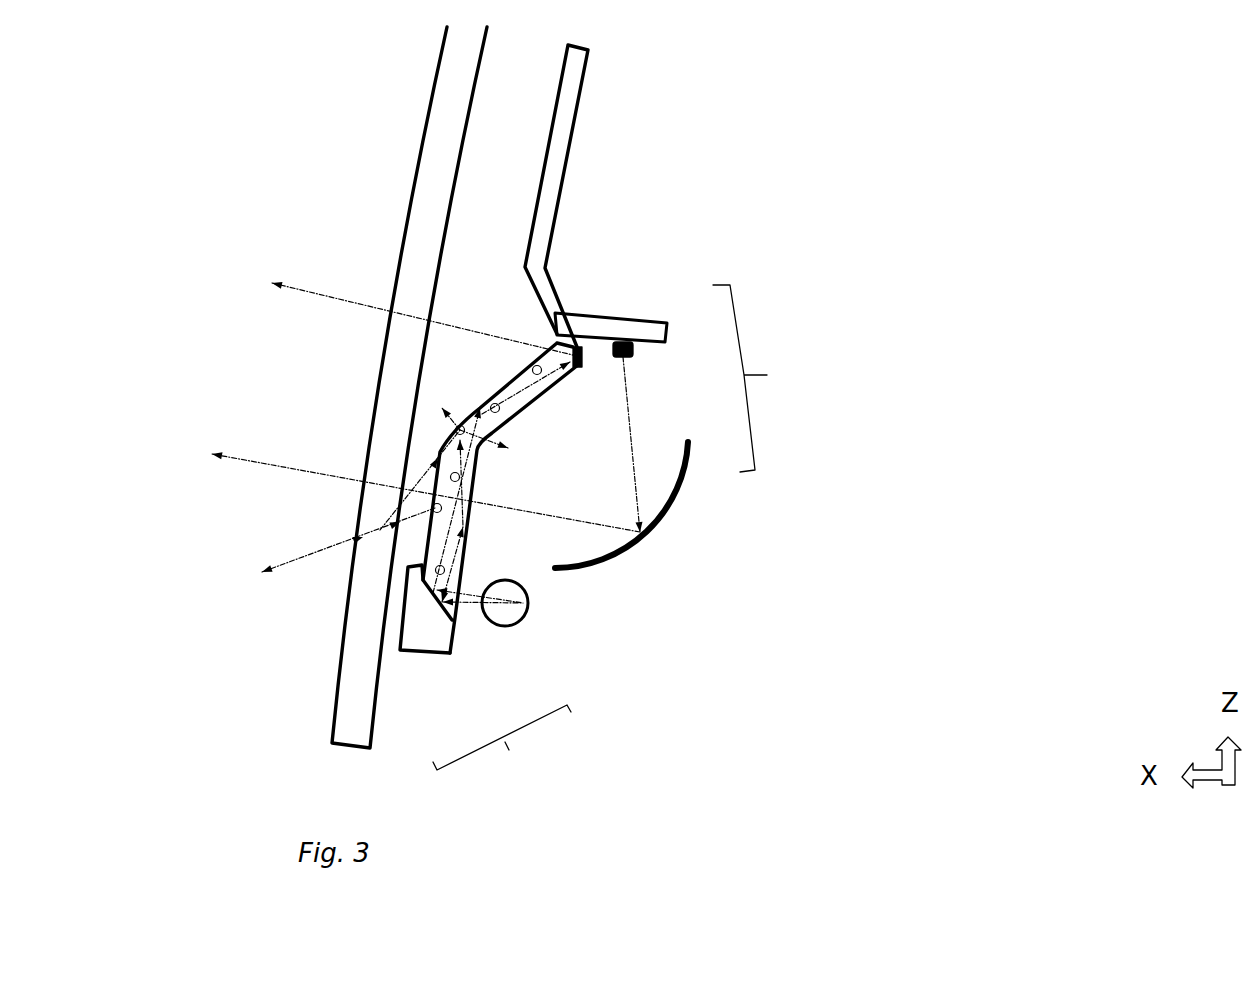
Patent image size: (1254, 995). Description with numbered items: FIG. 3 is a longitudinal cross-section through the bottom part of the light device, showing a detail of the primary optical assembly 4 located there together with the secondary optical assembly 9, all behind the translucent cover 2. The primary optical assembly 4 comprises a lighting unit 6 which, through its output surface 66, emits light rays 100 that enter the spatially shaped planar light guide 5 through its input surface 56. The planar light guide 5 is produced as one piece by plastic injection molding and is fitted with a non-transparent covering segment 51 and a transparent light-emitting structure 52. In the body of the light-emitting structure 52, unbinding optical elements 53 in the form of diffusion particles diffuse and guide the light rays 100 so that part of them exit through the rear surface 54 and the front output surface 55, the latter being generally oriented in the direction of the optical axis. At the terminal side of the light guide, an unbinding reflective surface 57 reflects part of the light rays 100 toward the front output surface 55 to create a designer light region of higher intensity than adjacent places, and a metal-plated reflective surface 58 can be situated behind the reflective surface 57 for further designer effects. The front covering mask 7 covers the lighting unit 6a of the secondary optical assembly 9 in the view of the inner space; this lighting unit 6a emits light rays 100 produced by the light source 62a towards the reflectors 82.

The translucent cover 2 is at (350, 695).
The primary optical assembly 4 is at (502, 753).
The planar light guide 5 is at (428, 463).
The lighting unit 6 is at (539, 621).
The lighting unit 6a is at (627, 304).
The front covering mask 7 is at (562, 130).
The secondary optical assembly 9 is at (756, 378).
The non-transparent covering segment 51 is at (422, 637).
The light-emitting structure 52 is at (460, 405).
The unbinding optical elements 53 is at (460, 405).
The rear surface 54 is at (583, 560).
The front output surface 55 is at (427, 507).
The input surface 56 is at (430, 593).
The unbinding reflective surface 57 is at (553, 335).
The metal-plated reflective surface 58 is at (578, 345).
The light source 62a is at (640, 347).
The output surface 66 is at (413, 620).
The reflectors 82 is at (701, 504).
The light rays 100 is at (300, 288).